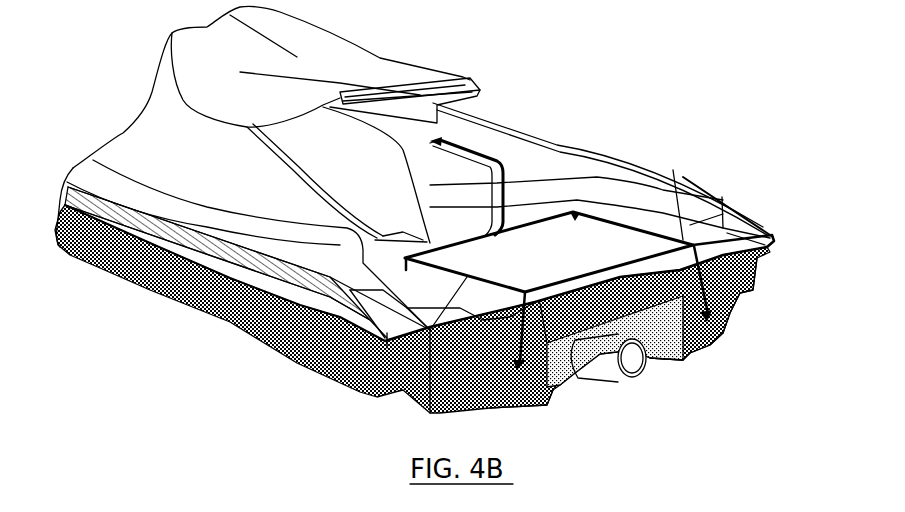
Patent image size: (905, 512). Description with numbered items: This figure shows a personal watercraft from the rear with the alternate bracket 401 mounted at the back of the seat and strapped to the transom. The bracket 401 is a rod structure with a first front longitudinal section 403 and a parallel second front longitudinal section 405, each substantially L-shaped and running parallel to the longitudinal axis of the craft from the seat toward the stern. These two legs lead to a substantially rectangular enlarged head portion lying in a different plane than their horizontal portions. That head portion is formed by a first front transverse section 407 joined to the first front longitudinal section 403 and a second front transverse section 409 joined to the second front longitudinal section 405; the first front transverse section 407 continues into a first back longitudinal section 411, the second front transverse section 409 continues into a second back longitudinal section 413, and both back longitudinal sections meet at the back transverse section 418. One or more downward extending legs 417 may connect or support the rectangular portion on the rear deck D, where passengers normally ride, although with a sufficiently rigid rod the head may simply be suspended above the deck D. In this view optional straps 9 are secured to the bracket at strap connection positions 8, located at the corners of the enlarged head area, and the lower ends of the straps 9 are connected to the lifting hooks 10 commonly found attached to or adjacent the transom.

The alternate bracket 401 is at (483, 150).
The first front longitudinal section 403 is at (497, 158).
The second front longitudinal section 405 is at (430, 143).
The first front transverse section 407 is at (552, 210).
The second front transverse section 409 is at (414, 216).
The first back longitudinal section 411 is at (638, 222).
The second back longitudinal section 413 is at (397, 400).
The downward extending leg 417 is at (600, 212).
The back transverse section 418 is at (636, 372).
The strap connecting position 8 is at (733, 294).
The strap 9 is at (726, 332).
The lifting hook 10 is at (720, 345).
The rear deck D is at (687, 360).